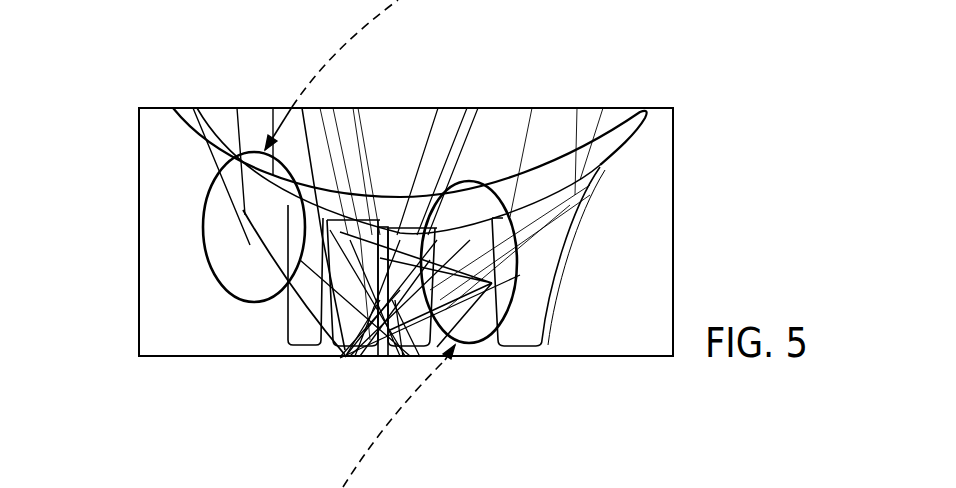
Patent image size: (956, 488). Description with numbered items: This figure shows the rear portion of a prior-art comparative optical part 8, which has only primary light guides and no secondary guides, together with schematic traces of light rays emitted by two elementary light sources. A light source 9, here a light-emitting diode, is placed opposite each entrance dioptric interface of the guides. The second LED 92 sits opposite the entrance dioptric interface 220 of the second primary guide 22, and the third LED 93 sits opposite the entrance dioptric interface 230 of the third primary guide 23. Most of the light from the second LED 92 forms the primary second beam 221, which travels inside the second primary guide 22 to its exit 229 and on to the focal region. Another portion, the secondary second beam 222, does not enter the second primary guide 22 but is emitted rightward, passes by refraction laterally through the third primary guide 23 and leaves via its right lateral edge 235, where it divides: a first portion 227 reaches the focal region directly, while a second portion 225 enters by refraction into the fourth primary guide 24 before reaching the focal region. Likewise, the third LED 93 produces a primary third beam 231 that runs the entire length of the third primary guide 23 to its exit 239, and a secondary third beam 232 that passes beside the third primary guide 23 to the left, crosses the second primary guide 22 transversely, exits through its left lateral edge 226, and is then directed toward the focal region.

The comparative optical part 8 is at (722, 122).
The light source 9 is at (395, 335).
The second primary guide 22 is at (305, 248).
The third primary guide 23 is at (400, 236).
The fourth primary guide 24 is at (537, 270).
The second LED 92 is at (343, 363).
The third LED 93 is at (403, 357).
The entrance dioptric interface 220 is at (340, 357).
The primary second beam 221 is at (340, 277).
The secondary second beam 222 is at (445, 320).
The second portion of the secondary second beam 225 is at (537, 214).
The left lateral edge 226 is at (292, 290).
The first portion of the secondary second beam 227 is at (503, 217).
The exit 229 is at (340, 132).
The entrance dioptric interface 230 is at (420, 357).
The primary third beam 231 is at (360, 320).
The secondary third beam 232 is at (340, 222).
The right lateral edge 235 is at (520, 308).
The exit 239 is at (410, 235).